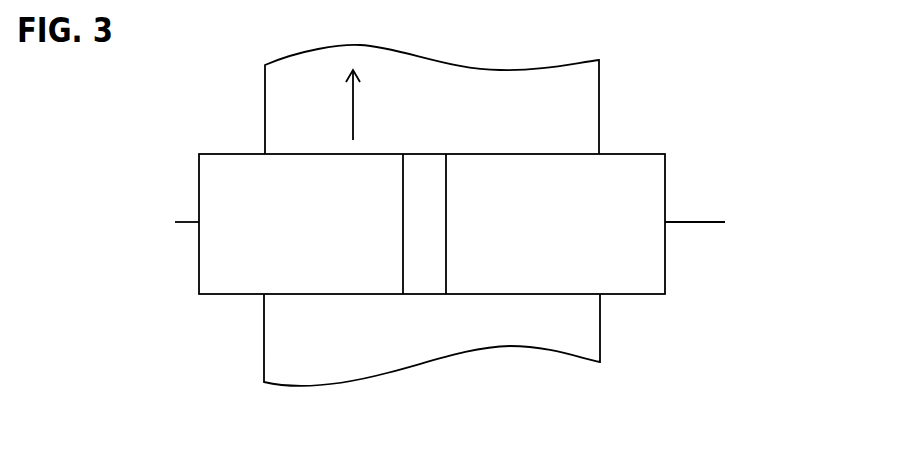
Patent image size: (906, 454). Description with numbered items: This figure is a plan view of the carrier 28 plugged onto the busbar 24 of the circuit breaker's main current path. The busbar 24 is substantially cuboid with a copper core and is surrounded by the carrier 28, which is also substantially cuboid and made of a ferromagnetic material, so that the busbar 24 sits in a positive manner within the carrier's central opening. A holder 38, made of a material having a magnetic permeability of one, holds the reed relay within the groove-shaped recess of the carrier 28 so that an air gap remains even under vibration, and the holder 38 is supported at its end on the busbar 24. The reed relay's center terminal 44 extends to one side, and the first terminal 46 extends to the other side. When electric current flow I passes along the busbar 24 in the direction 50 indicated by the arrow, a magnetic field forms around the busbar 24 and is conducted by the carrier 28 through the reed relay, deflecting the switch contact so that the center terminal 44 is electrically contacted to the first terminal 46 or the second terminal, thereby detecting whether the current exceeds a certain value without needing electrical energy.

The busbar 24 is at (574, 118).
The carrier 28 is at (622, 278).
The holder 38 is at (422, 277).
The center terminal 44 is at (187, 221).
The first terminal 46 is at (717, 185).
The direction 50 is at (350, 110).